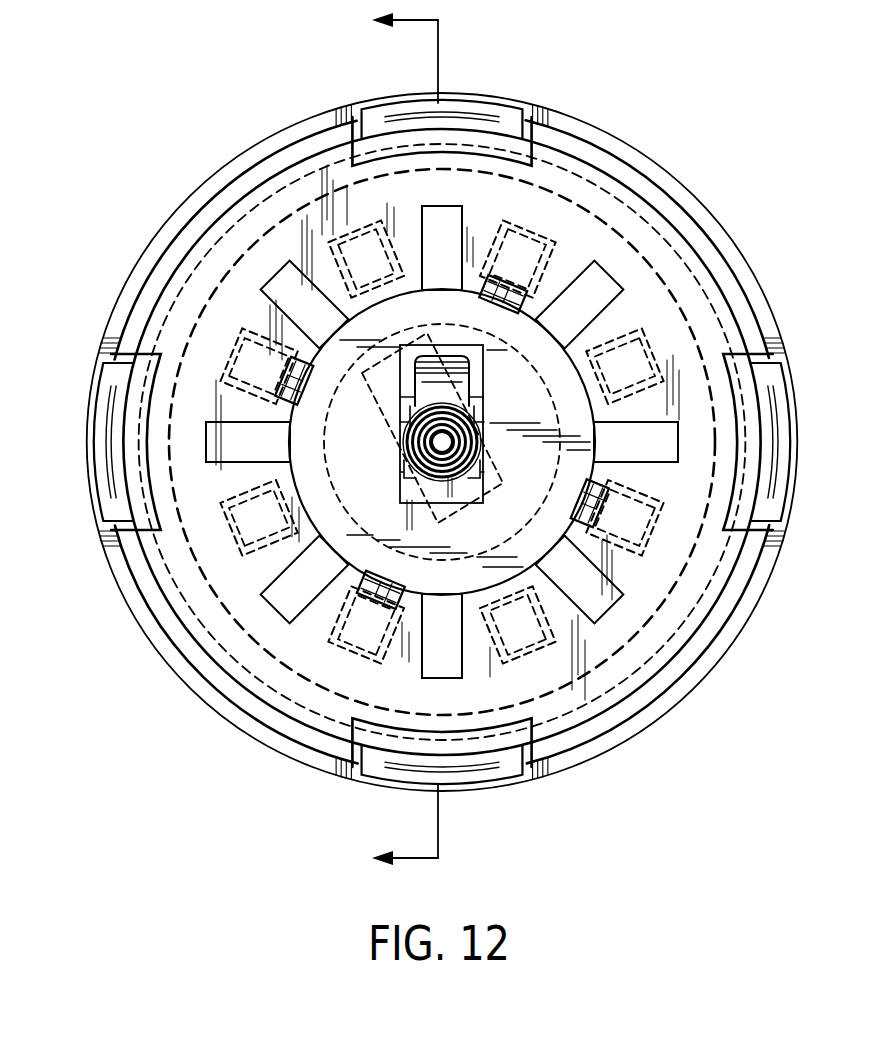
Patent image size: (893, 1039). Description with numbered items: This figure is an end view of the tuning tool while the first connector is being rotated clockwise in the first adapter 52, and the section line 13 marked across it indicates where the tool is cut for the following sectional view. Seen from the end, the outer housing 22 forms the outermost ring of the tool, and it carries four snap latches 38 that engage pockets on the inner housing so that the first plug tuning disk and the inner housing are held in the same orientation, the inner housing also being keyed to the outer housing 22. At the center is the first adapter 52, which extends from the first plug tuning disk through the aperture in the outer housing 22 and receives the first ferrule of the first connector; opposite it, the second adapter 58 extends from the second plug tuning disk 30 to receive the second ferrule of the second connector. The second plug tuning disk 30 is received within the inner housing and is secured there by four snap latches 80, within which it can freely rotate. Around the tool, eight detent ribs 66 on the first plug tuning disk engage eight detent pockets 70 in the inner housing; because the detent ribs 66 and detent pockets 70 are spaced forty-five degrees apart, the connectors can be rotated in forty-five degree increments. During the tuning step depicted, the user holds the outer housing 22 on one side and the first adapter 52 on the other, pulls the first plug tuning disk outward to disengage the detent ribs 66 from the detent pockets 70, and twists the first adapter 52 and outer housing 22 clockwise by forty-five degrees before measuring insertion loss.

The section line 13- 13 is at (386, 440).
The outer housing 22 is at (593, 133).
The second plug tuning disk 30 is at (352, 582).
The snap latches 38 is at (772, 443).
The first adapter 52 is at (362, 373).
The second adapter 58 is at (485, 348).
The detent ribs 66 is at (313, 167).
The detent pockets 70 is at (285, 293).
The snap latches 80 is at (323, 512).